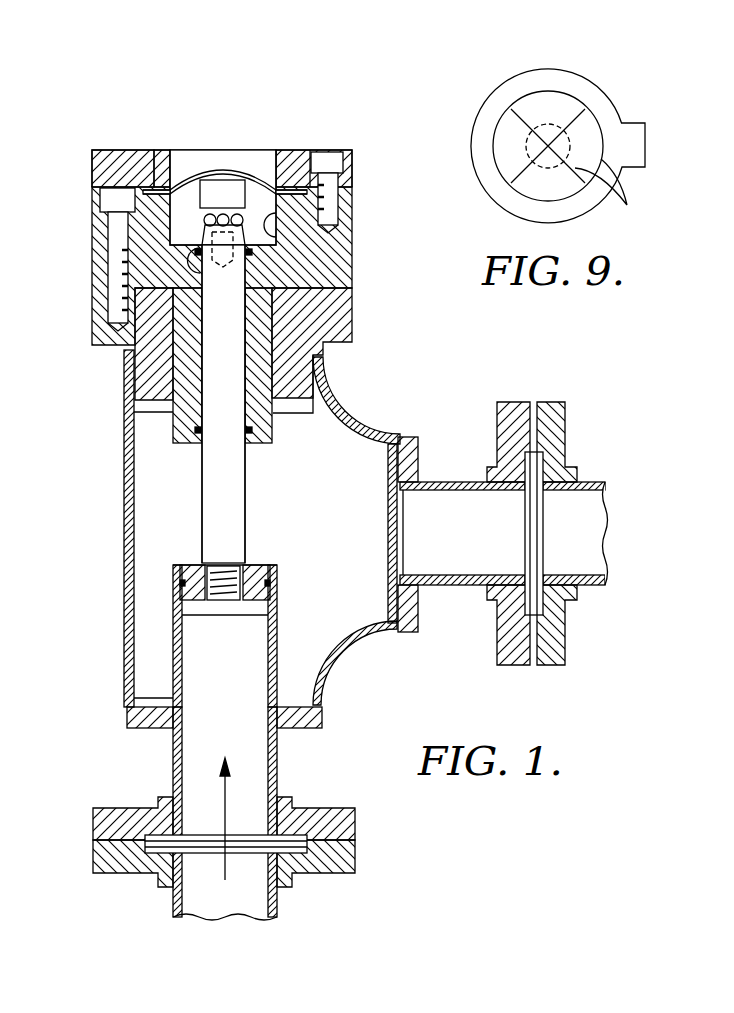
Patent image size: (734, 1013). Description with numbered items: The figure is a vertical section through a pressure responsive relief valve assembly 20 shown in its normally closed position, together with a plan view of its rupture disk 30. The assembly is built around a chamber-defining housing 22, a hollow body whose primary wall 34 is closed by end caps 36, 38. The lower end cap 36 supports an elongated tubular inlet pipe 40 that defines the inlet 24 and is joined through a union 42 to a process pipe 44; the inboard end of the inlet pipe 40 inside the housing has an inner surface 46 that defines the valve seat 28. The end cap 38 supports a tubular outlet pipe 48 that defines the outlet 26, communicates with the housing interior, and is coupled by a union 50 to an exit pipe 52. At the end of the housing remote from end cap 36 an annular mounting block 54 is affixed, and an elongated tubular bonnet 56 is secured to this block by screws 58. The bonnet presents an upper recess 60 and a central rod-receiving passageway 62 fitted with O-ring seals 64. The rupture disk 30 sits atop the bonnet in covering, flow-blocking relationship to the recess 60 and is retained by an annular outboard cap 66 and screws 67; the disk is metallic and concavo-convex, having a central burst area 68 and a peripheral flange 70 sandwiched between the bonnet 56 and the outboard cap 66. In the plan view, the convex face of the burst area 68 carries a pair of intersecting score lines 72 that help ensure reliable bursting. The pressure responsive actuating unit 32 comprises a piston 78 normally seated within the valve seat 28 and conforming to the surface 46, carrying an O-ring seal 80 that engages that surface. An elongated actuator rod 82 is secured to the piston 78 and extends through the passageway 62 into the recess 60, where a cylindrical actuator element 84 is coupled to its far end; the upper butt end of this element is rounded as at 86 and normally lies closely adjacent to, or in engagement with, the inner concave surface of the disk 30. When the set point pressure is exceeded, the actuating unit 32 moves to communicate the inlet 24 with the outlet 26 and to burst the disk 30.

In FIG. 1, the pressure responsive relief valve assembly 20 is at (388, 190).
In FIG. 1, the chamber-defining housing 22 is at (358, 392).
In FIG. 1, the inlet 24 is at (306, 626).
In FIG. 1, the outlet 26 is at (448, 465).
In FIG. 1, the valve seat 28 is at (286, 557).
In FIG. 1, the rupture disk 30 is at (258, 156).
In FIG. 9, the rupture disk 30 is at (630, 93).
In FIG. 1, the pressure responsive actuating unit 32 is at (272, 466).
In FIG. 1, the primary wall 34 is at (127, 614).
In FIG. 1, the end cap 36 is at (304, 728).
In FIG. 1, the end cap 38 is at (421, 619).
In FIG. 1, the inlet pipe 40 is at (177, 765).
In FIG. 1, the union 42 is at (354, 819).
In FIG. 1, the process pipe 44 is at (280, 904).
In FIG. 1, the inner surface 46 is at (277, 598).
In FIG. 1, the outlet pipe 48 is at (455, 584).
In FIG. 1, the union 50 is at (558, 427).
In FIG. 1, the exit pipe 52 is at (600, 562).
In FIG. 1, the annular mounting block 54 is at (333, 318).
In FIG. 1, the bonnet 56 is at (345, 262).
In FIG. 1, the screws 58 is at (116, 237).
In FIG. 1, the upper recess 60 is at (281, 240).
In FIG. 1, the rod-receiving passageway 62 is at (250, 388).
In FIG. 1, the O-ring seals 64 is at (196, 272).
In FIG. 1, the annular outboard cap 66 is at (120, 158).
In FIG. 1, the screws 67 is at (329, 157).
In FIG. 1, the central burst area 68 is at (190, 187).
In FIG. 9, the central burst area 68 is at (505, 158).
In FIG. 1, the peripheral flange 70 is at (158, 180).
In FIG. 9, the intersecting score lines 72 is at (627, 205).
In FIG. 1, the piston 78 is at (190, 570).
In FIG. 1, the O-ring seal 80 is at (198, 588).
In FIG. 1, the actuator rod 82 is at (237, 508).
In FIG. 1, the cylindrical actuator element 84 is at (207, 188).
In FIG. 9, the cylindrical actuator element 84 is at (540, 122).
In FIG. 1, the rounded butt end 86 is at (223, 178).